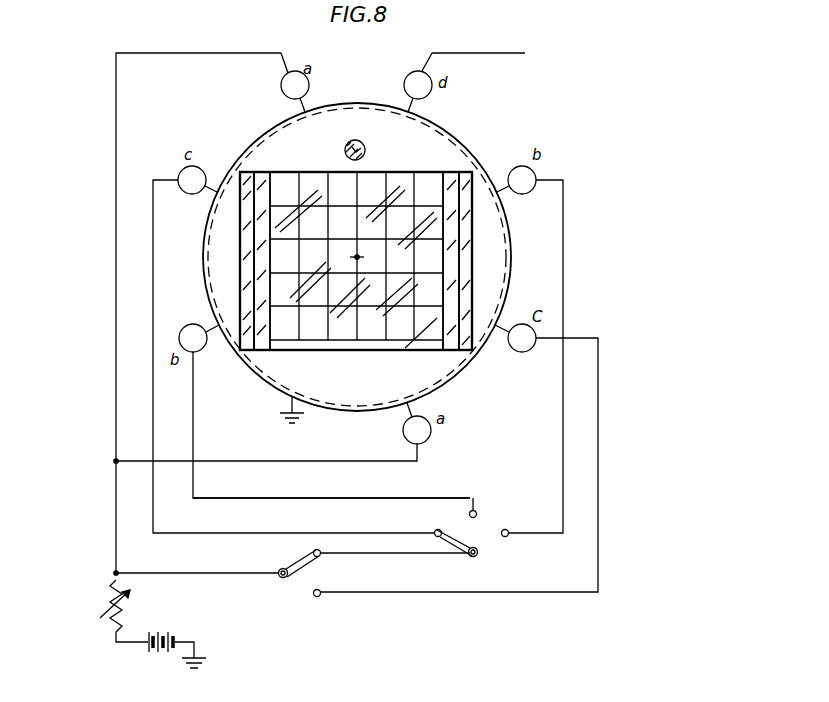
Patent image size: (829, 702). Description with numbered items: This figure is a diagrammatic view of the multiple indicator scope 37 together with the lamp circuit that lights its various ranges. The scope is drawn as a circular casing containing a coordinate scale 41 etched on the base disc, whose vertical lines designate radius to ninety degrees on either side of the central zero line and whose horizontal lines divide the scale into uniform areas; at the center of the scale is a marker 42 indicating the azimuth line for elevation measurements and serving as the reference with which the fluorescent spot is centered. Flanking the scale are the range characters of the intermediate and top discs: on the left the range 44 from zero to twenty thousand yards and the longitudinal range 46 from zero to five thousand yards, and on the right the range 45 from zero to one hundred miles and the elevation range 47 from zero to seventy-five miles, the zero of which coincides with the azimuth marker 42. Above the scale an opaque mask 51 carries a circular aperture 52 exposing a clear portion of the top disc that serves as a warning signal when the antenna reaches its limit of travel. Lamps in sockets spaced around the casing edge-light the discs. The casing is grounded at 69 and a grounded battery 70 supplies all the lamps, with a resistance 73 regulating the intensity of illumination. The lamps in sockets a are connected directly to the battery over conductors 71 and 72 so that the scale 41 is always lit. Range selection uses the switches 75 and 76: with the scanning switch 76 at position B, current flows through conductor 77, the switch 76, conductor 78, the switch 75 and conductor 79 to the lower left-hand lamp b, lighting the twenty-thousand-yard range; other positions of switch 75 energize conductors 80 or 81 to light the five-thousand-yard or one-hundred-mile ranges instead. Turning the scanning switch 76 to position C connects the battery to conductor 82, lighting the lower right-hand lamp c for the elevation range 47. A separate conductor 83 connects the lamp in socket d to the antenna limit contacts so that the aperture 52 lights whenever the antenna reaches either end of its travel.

The multiple indicator scope 37 is at (488, 253).
The coordinate scale 41 is at (392, 188).
The marker 42 is at (360, 256).
The left-hand range 44 is at (240, 212).
The right-hand range 45 is at (452, 216).
The longitudinal range 46 is at (243, 255).
The elevation range 47 is at (467, 283).
The opaque mask 51 is at (287, 377).
The circular aperture 52 is at (353, 146).
The ground 69 is at (296, 416).
The battery 70 is at (164, 655).
The conductor 71 is at (116, 247).
The conductor 72 is at (270, 462).
The resistance 73 is at (96, 620).
The switch 75 is at (452, 558).
The scanning switch 76 is at (294, 582).
The conductor 77 is at (186, 573).
The conductor 78 is at (378, 553).
The conductor 79 is at (375, 498).
The conductor 80 is at (153, 334).
The conductor 81 is at (563, 282).
The conductor 82 is at (478, 592).
The conductor 83 is at (482, 53).